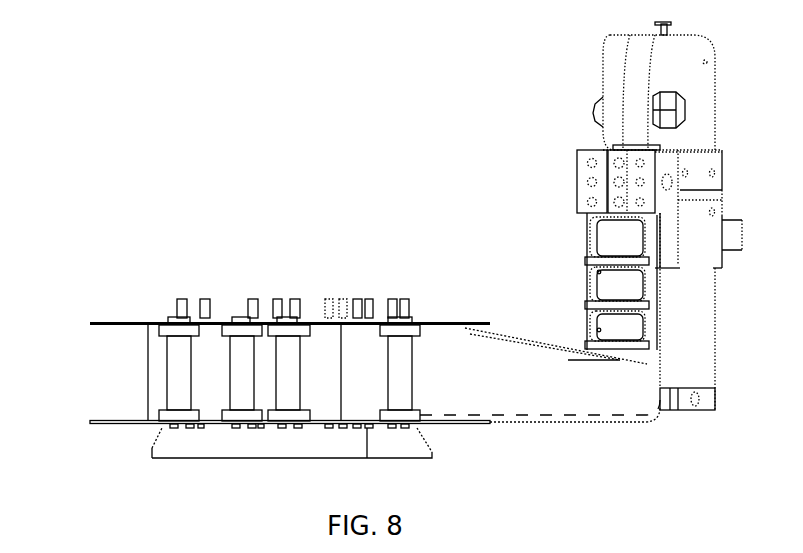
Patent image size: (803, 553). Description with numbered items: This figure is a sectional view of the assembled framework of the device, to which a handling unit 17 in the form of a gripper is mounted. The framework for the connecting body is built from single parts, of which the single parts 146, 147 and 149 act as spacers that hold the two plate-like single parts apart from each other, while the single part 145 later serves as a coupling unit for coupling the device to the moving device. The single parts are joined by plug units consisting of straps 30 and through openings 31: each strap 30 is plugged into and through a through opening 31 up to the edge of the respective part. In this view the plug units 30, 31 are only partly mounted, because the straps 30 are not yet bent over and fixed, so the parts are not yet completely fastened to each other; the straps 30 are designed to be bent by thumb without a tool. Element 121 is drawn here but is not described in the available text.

The handling unit 17 is at (712, 312).
The strap 30 is at (250, 318).
The through opening 31 is at (508, 345).
The mounting bracket 121 is at (577, 176).
The single part 145 is at (200, 452).
The single part 146 is at (172, 375).
The single part 147 is at (170, 331).
The single part 149 is at (172, 318).